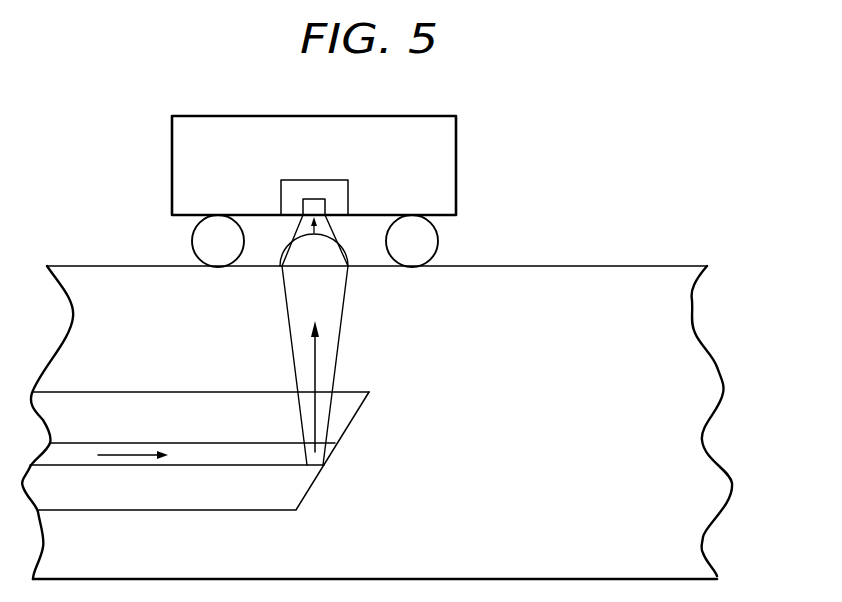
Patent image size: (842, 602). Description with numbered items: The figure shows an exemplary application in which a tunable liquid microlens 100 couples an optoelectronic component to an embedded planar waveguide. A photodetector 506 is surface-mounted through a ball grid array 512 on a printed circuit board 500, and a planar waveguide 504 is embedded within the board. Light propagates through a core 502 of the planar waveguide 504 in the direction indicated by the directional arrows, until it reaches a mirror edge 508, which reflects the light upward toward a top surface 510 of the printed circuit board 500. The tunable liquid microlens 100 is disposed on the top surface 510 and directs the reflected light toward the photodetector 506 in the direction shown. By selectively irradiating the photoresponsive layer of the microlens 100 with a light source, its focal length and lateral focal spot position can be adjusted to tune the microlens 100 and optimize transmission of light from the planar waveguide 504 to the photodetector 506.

The tunable liquid microlens 100 is at (343, 244).
The printed circuit board 500 is at (707, 266).
The core 502 is at (218, 455).
The planar waveguide 504 is at (182, 403).
The photodetector 506 is at (455, 150).
The mirror edge 508 is at (308, 492).
The top surface 510 is at (632, 266).
The ball grid array 512 is at (192, 238).